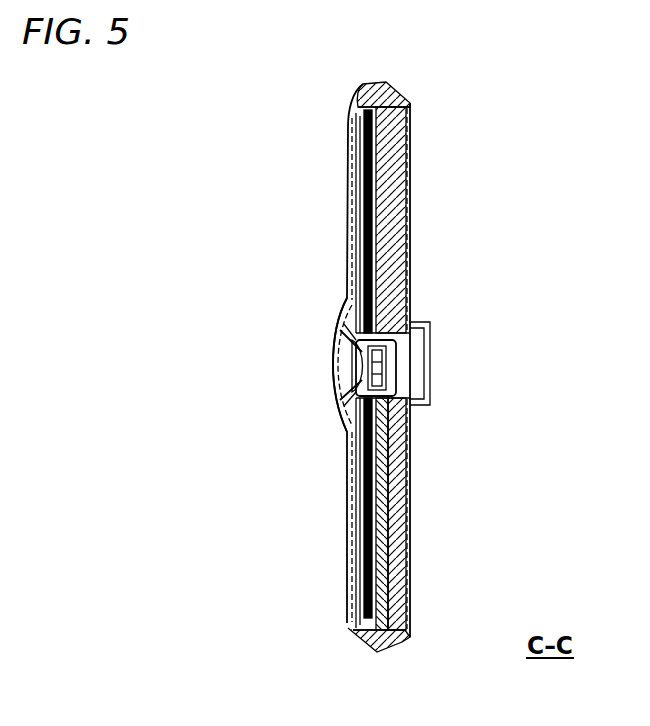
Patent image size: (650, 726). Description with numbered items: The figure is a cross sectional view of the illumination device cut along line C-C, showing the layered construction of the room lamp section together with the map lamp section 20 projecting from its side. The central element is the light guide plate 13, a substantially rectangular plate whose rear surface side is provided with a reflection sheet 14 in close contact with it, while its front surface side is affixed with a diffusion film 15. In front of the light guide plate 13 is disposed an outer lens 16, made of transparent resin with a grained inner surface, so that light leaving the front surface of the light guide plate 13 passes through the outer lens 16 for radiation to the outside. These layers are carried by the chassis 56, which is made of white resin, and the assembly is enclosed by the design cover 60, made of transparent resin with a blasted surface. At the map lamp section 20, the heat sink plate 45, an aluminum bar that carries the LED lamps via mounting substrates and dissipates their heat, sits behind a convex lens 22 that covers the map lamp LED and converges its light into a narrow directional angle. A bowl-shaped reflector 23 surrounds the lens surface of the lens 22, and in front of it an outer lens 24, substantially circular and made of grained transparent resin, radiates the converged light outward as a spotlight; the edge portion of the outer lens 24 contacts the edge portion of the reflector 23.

The light guide plate 13 is at (398, 179).
The reflection sheet 14 is at (372, 213).
The diffusion film 15 is at (356, 199).
The outer lens 16 is at (348, 166).
The map lamp section 20 is at (312, 383).
The lens 22 is at (352, 345).
The reflector 23 is at (344, 334).
The outer lens 24 is at (338, 358).
The heat sink plate 45 is at (396, 358).
The chassis 56 is at (410, 142).
The design cover 60 is at (398, 87).